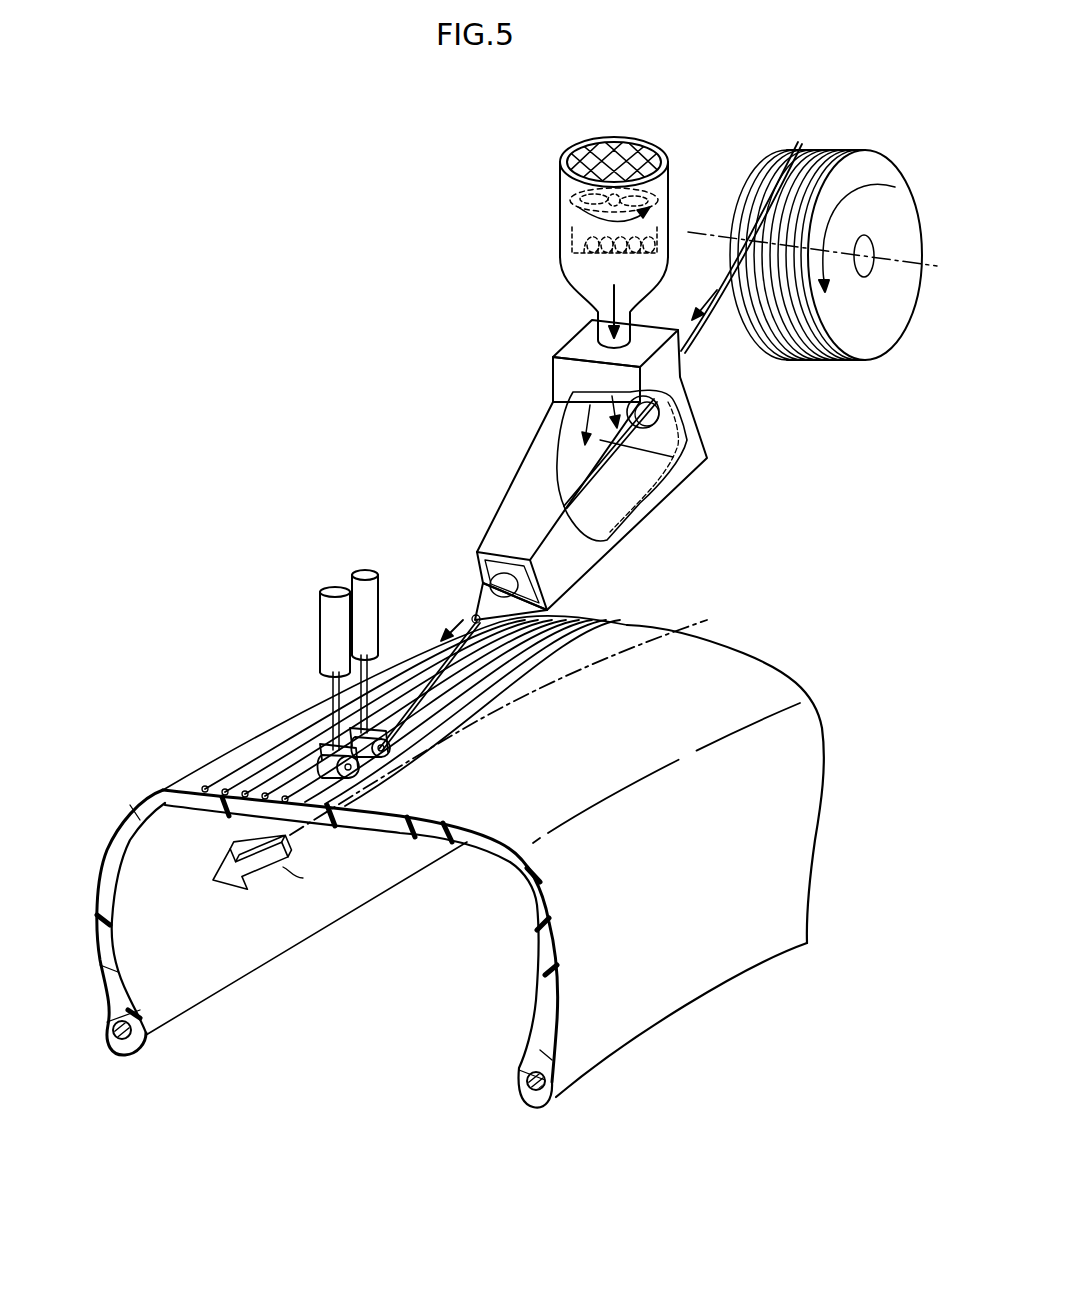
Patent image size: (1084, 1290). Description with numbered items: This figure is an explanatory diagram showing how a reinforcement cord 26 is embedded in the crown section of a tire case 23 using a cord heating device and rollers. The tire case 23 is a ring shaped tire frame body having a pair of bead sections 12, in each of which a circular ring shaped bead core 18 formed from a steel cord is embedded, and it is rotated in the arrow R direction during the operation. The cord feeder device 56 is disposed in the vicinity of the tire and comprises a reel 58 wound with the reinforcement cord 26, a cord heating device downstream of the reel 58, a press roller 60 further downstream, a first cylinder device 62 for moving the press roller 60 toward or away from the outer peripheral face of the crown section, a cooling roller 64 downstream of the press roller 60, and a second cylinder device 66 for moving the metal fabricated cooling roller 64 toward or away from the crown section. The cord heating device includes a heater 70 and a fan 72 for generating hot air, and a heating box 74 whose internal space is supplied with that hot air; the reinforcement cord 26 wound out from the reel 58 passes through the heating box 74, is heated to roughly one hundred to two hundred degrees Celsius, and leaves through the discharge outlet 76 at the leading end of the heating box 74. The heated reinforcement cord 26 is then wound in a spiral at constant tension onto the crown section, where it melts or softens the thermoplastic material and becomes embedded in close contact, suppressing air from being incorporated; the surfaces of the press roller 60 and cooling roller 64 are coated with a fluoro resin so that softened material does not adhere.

The bead section 12 is at (117, 1053).
The bead core 18 is at (137, 1033).
The tire case 23 is at (535, 945).
The reinforcement cord 26 is at (218, 777).
The cord feeder device 56 is at (438, 277).
The reel 58 is at (852, 333).
The press roller 60 is at (390, 760).
The first cylinder device 62 is at (365, 570).
The cooling roller 64 is at (358, 769).
The second cylinder device 66 is at (323, 615).
The heater 70 is at (553, 255).
The fan 72 is at (660, 197).
The heating box 74 is at (530, 440).
The discharge outlet 76 is at (473, 617).